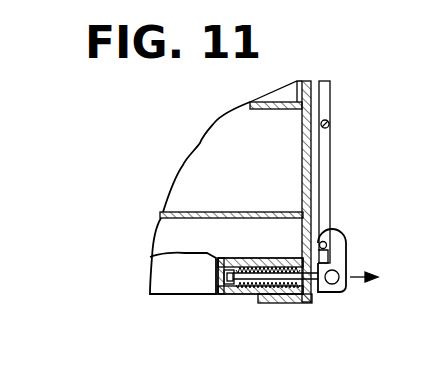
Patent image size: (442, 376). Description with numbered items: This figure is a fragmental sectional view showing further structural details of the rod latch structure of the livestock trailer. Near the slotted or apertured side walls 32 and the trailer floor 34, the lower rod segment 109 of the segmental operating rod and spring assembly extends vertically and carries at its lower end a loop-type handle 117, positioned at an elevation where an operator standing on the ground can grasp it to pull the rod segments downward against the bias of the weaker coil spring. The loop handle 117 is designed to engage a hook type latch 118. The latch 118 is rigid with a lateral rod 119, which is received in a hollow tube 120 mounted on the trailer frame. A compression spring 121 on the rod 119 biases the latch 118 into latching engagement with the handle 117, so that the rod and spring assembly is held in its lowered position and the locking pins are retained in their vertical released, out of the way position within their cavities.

The side walls 32 is at (302, 81).
The trailer floor 34 is at (200, 212).
The lower rod segment 109 is at (326, 82).
The loop-type handle 117 is at (329, 123).
The hook type latch 118 is at (340, 252).
The lateral rod 119 is at (283, 260).
The hollow tube 120 is at (150, 255).
The compression spring 121 is at (250, 260).